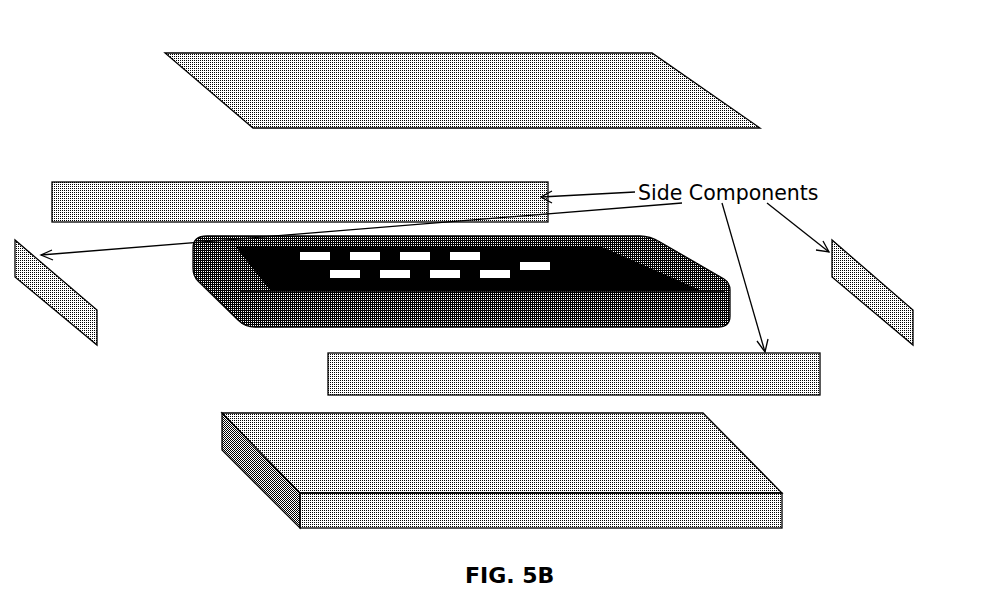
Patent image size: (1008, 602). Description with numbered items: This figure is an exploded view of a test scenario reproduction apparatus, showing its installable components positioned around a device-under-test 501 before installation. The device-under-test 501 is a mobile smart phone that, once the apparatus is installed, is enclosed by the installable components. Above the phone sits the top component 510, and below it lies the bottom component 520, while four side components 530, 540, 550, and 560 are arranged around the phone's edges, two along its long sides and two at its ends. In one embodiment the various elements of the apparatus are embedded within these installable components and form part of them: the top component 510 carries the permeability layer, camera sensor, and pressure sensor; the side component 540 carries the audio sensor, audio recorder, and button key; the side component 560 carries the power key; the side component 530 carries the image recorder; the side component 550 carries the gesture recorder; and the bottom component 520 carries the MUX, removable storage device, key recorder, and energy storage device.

The device-under-test 501 is at (207, 291).
The top component 510 is at (560, 53).
The bottom component 520 is at (247, 470).
The side component 530 is at (127, 182).
The side component 540 is at (69, 320).
The side component 550 is at (328, 364).
The side component 560 is at (872, 312).